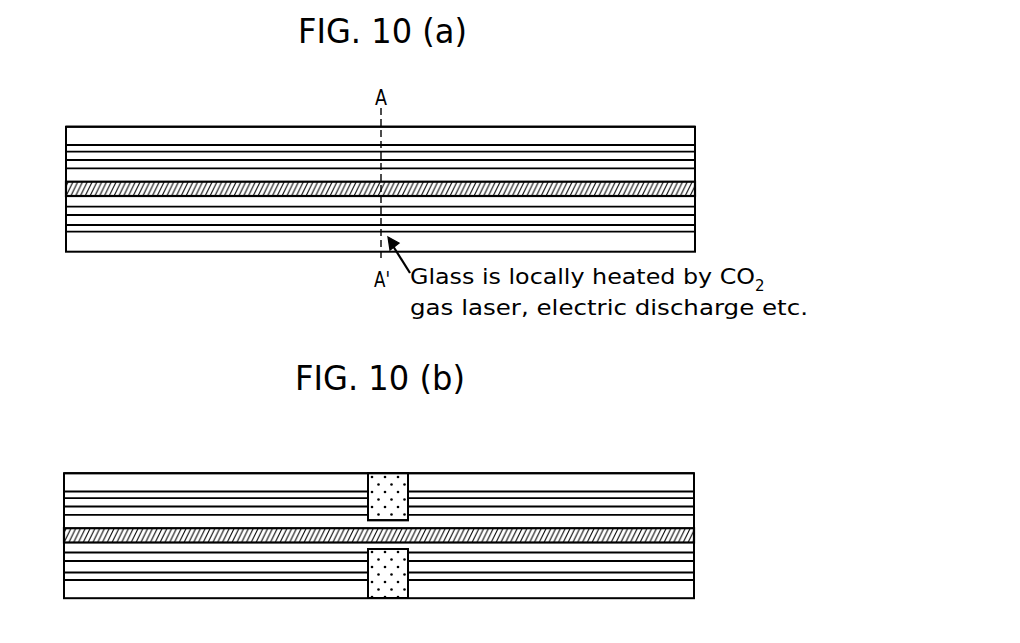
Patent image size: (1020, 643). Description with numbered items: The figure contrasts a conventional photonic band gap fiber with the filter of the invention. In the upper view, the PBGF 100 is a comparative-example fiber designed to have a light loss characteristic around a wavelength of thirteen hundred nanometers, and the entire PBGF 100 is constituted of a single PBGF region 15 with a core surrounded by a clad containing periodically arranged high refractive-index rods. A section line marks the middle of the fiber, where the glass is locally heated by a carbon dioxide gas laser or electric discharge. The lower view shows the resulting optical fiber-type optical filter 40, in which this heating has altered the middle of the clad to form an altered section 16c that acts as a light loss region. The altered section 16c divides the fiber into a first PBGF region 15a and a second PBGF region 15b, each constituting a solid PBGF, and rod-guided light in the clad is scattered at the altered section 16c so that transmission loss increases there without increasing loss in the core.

The PBGF 100 is at (732, 113).
The optical fiber-type optical filter 40 is at (730, 459).
The PBGF region 15 is at (191, 130).
The first PBGF region 15a is at (189, 478).
The second PBGF region 15b is at (510, 478).
The altered section 16c is at (389, 477).